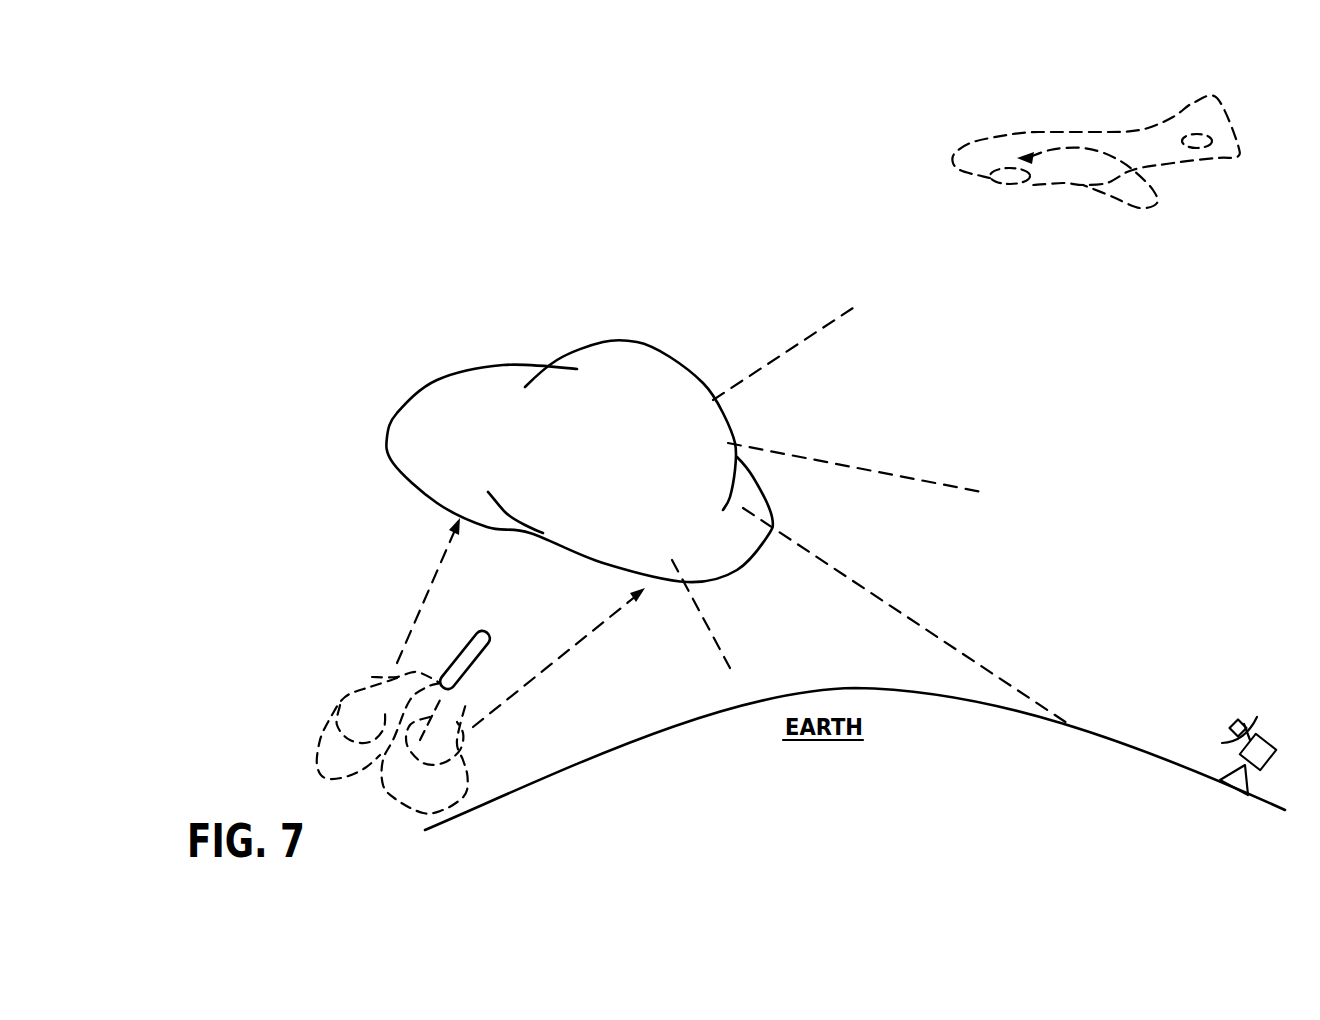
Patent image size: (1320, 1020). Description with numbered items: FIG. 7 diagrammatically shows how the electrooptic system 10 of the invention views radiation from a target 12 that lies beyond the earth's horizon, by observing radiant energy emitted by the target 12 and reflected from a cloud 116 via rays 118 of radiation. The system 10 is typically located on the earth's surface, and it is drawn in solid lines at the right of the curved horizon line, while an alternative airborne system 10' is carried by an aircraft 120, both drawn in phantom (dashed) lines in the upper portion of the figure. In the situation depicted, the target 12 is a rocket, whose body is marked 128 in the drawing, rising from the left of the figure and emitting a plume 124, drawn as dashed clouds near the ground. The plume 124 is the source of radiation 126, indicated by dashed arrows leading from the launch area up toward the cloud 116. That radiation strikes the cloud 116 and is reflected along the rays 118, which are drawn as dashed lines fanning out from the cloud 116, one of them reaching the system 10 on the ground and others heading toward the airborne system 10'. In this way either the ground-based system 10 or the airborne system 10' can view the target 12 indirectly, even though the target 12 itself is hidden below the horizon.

The system 10 is at (1263, 742).
The airborne system 10' is at (1095, 170).
The target 12 is at (372, 677).
The cloud 116 is at (653, 342).
The rays of radiation 118 is at (838, 320).
The aircraft 120 is at (1073, 133).
The plume 124 is at (467, 770).
The radiation 126 is at (423, 603).
The missile 128 is at (490, 632).